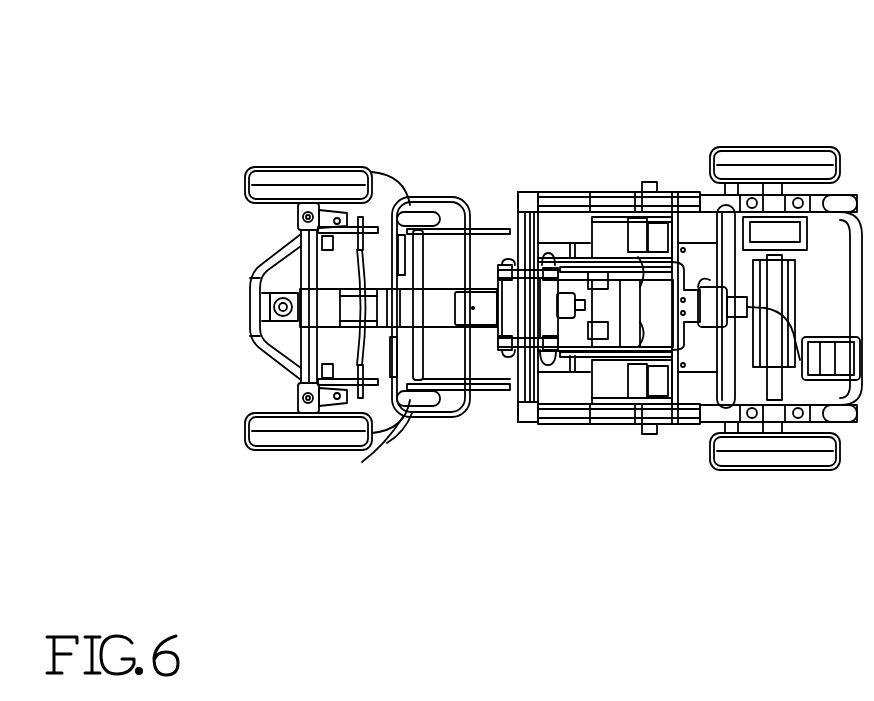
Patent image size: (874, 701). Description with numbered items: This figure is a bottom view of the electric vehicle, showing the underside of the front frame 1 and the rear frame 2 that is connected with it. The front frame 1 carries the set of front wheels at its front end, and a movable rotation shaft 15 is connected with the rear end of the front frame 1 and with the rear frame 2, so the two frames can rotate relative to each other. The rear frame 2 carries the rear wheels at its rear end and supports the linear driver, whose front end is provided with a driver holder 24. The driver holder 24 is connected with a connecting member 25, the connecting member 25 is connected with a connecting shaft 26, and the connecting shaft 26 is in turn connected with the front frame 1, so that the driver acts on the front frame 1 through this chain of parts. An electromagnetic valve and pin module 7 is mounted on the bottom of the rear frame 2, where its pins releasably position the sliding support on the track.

The front frame 1 is at (250, 308).
The rear frame 2 is at (607, 424).
The electromagnetic valve and pin module 7 is at (638, 233).
The movable rotation shaft 15 is at (483, 337).
The driver holder 24 is at (551, 316).
The connecting member 25 is at (527, 192).
The connecting shaft 26 is at (512, 322).